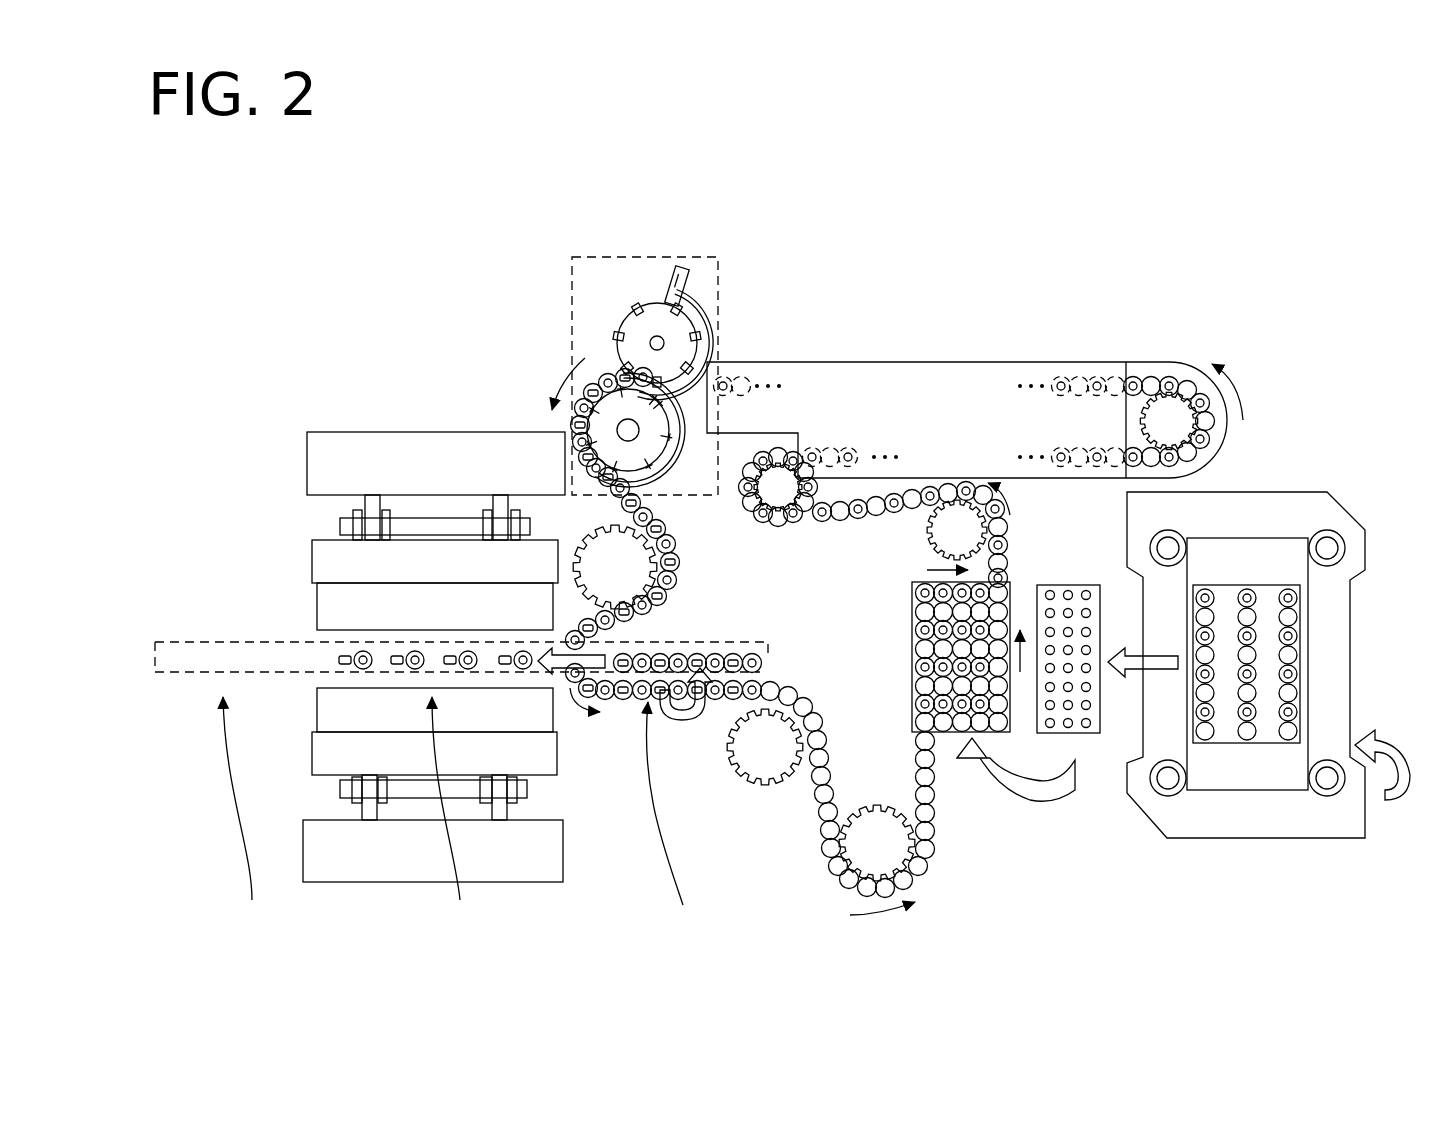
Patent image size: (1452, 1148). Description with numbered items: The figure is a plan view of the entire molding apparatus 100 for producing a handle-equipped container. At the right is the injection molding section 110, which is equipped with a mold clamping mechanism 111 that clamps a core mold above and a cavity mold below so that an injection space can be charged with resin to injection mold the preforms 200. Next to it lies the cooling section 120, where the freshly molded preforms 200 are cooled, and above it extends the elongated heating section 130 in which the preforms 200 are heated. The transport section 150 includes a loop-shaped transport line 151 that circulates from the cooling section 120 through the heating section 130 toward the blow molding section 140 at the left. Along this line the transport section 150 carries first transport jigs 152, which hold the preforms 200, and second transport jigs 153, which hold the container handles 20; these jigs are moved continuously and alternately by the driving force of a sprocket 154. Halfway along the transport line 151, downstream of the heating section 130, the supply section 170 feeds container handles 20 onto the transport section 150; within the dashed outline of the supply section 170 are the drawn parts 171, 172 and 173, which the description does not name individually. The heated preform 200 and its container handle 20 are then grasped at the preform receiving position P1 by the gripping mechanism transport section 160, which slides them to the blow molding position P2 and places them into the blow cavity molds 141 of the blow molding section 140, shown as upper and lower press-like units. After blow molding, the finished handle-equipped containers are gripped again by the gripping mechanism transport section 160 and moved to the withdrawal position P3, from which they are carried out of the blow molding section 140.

The molding apparatus 100 is at (1180, 320).
The injection molding section 110 is at (1348, 496).
The mold clamping mechanism 111 is at (1328, 643).
The cooling section 120 is at (1025, 572).
The heating section 130 is at (917, 355).
The blow molding section 140 is at (357, 408).
The blow cavity molds 141 is at (537, 717).
The transport section 150 is at (900, 682).
The transport line 151 is at (825, 792).
The first transport jigs 152 is at (674, 591).
The second transport jigs 153 is at (923, 683).
The sprocket 154 is at (937, 526).
The gripping mechanism transport section 160 is at (768, 655).
The supply section 170 is at (572, 266).
The pusher 171 is at (685, 272).
The upper rotary wheel 172 is at (620, 340).
The lower rotary wheel 173 is at (650, 445).
The container handle 20 is at (679, 563).
The preform 200 is at (1294, 600).
The preform receiving position P1 is at (665, 819).
The blow molding position P2 is at (451, 817).
The withdrawal position P3 is at (242, 817).